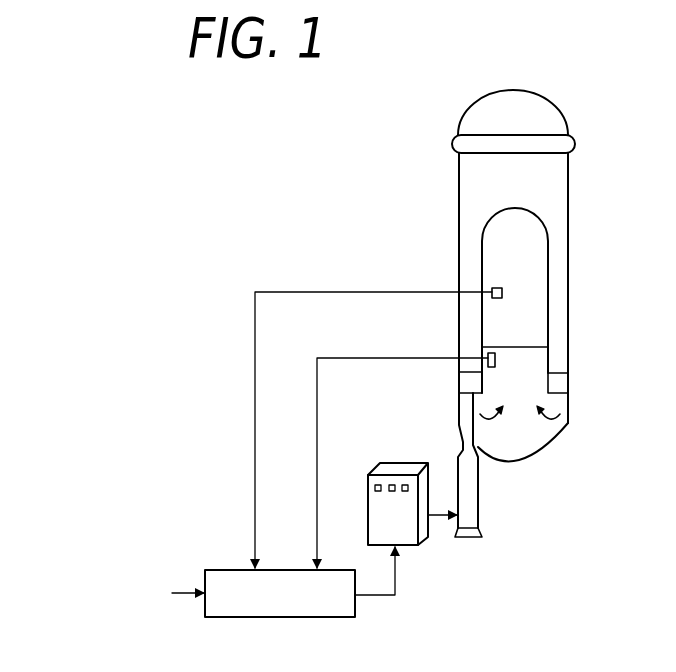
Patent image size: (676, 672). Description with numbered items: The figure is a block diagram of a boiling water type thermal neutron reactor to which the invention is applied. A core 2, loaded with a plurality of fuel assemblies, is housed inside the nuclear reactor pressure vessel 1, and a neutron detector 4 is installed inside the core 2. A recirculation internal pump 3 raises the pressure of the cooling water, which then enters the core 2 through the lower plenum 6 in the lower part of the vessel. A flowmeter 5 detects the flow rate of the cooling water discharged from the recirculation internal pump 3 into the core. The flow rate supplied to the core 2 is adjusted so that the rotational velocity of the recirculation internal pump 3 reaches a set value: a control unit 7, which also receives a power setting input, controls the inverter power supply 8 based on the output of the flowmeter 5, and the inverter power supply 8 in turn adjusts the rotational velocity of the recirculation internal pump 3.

The nuclear reactor pressure vessel 1 is at (562, 113).
The core 2 is at (533, 262).
The recirculation internal pump 3 is at (470, 508).
The neutron detector 4 is at (492, 288).
The flowmeter 5 is at (488, 356).
The lower plenum 6 is at (543, 438).
The control unit 7 is at (312, 617).
The inverter power supply 8 is at (368, 500).